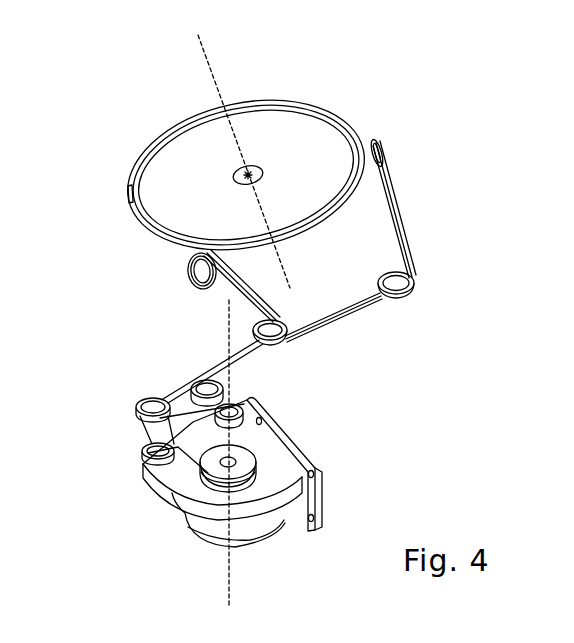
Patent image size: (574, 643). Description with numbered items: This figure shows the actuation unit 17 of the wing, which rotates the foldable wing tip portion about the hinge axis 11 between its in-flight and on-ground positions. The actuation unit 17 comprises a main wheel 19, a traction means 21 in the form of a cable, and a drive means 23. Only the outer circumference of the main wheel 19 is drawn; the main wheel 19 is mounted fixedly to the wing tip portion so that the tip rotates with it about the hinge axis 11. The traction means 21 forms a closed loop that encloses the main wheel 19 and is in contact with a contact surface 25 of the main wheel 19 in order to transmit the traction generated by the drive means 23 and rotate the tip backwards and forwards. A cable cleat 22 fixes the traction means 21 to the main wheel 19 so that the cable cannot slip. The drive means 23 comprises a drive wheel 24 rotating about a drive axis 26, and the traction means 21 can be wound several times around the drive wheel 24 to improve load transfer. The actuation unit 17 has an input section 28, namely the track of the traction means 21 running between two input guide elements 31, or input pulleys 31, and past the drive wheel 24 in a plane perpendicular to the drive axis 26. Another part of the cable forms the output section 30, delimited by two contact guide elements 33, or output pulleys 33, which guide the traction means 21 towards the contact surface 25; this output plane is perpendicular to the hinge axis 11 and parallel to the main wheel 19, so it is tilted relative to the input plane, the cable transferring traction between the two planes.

The hinge axis 11 is at (212, 70).
The actuation unit 17 is at (398, 377).
The main wheel 19 is at (262, 100).
The traction means 21 is at (398, 200).
The cable cleat 22 is at (127, 191).
The drive means 23 is at (283, 527).
The drive wheel 24 is at (217, 473).
The contact surface 25 is at (320, 234).
The drive axis 26 is at (233, 380).
The input section 28 is at (128, 394).
The output section 30 is at (148, 141).
The input guide elements 31 is at (415, 283).
The contact guide elements 33 is at (383, 153).